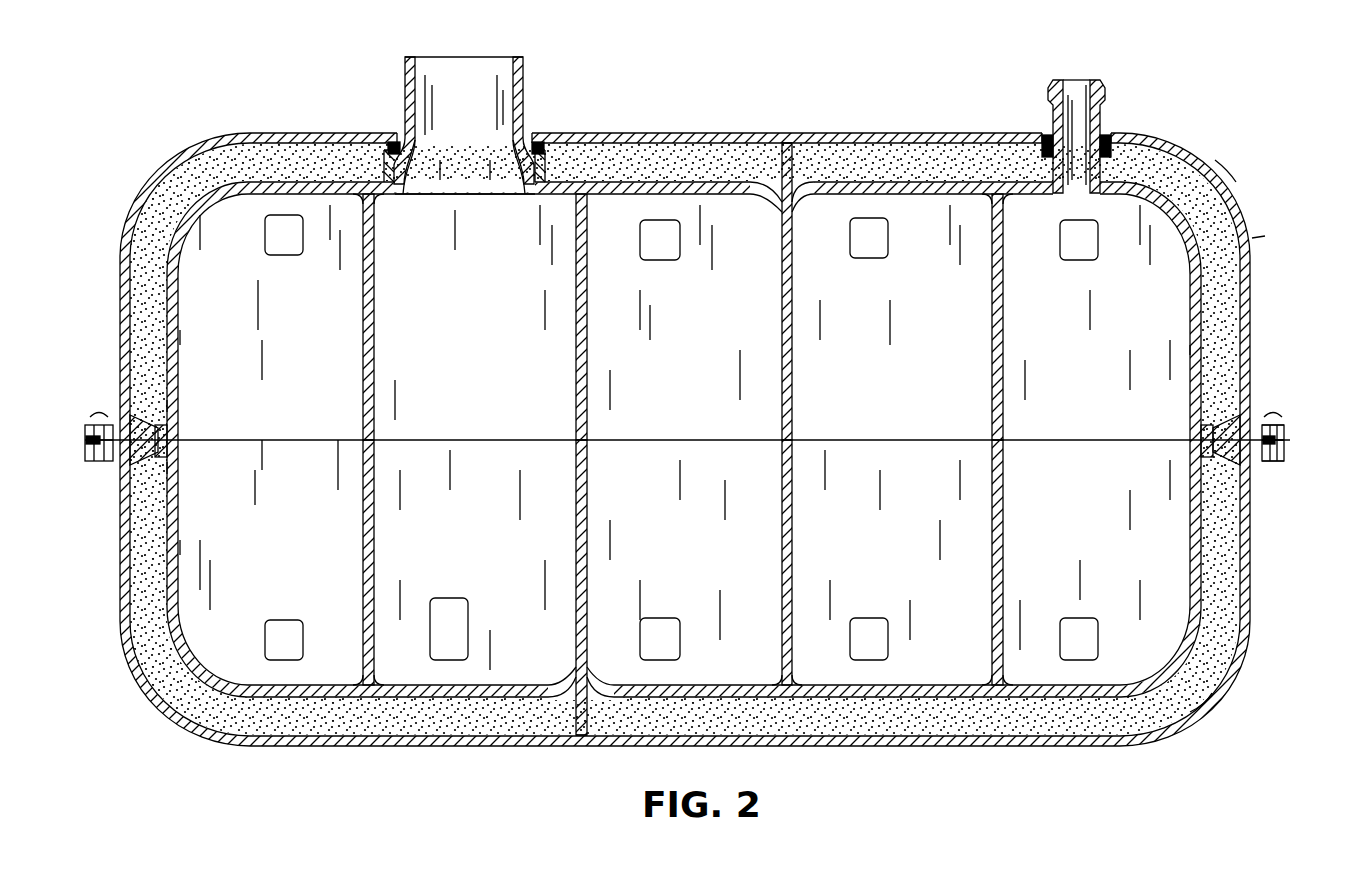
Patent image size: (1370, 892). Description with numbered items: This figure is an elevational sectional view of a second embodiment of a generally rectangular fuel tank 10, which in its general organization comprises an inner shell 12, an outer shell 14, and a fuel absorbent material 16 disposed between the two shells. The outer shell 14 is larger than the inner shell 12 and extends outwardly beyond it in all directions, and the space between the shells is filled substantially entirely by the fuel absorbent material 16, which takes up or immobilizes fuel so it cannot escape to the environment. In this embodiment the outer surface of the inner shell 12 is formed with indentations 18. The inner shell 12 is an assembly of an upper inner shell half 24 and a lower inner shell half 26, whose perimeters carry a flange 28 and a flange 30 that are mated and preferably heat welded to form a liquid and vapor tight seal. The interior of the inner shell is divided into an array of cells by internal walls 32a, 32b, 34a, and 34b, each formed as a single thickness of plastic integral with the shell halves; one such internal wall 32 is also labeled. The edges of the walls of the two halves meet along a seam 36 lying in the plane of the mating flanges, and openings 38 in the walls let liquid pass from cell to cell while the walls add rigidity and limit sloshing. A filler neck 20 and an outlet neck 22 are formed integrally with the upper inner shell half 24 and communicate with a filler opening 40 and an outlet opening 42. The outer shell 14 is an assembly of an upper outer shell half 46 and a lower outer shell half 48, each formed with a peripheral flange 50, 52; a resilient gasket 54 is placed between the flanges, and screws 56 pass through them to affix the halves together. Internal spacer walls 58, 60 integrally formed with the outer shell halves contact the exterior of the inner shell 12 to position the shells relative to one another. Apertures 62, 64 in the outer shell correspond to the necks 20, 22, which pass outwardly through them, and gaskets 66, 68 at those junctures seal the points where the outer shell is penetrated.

The fuel tank 10 is at (1256, 239).
The inner shell 12 is at (1186, 350).
The outer shell 14 is at (1254, 340).
The fuel absorbent material 16 is at (312, 150).
The indentations 18 is at (813, 205).
The filler neck 20 is at (525, 70).
The outlet neck 22 is at (1100, 88).
The upper inner shell half 24 is at (186, 338).
The lower inner shell half 26 is at (195, 545).
The flange 28 is at (178, 406).
The flange 30 is at (178, 470).
The internal wall 32 is at (496, 551).
The internal wall 32a is at (325, 341).
The internal wall 32b is at (315, 551).
The internal wall 34a is at (376, 352).
The internal wall 34b is at (375, 562).
The seam 36 is at (445, 438).
The openings 38 is at (268, 236).
The filler opening 40 is at (473, 185).
The outlet opening 42 is at (1072, 195).
The upper outer shell half 46 is at (1200, 180).
The lower outer shell half 48 is at (1207, 700).
The peripheral flange 50 is at (1288, 434).
The peripheral flange 52 is at (1287, 462).
The resilient gasket 54 is at (1288, 444).
The screws 56 is at (100, 416).
The spacer wall 58 is at (786, 150).
The spacer wall 60 is at (578, 712).
The aperture 62 is at (396, 142).
The aperture 64 is at (1103, 130).
The gasket 66 is at (545, 150).
The gasket 68 is at (1045, 138).